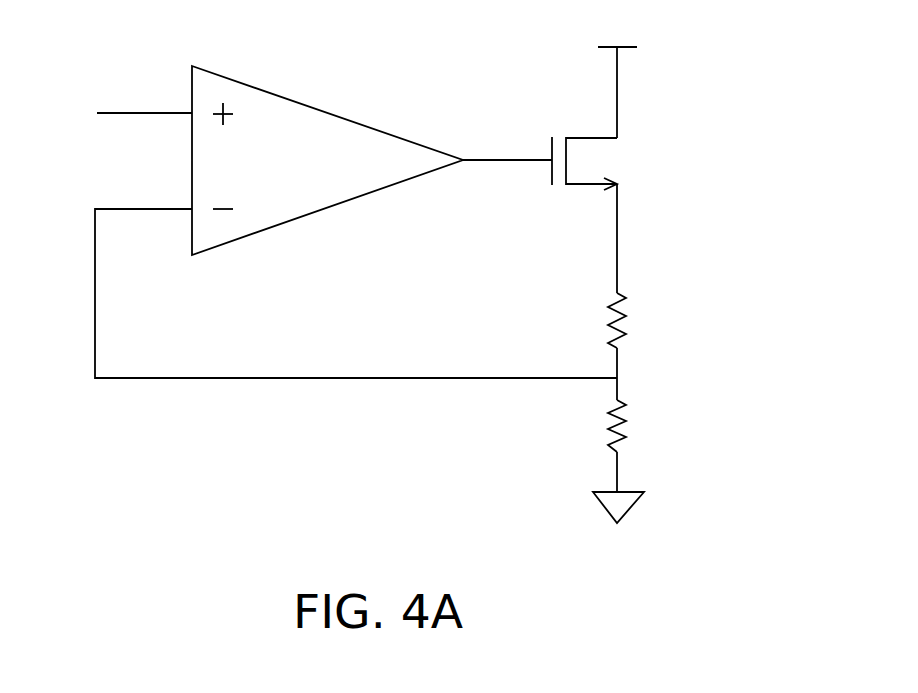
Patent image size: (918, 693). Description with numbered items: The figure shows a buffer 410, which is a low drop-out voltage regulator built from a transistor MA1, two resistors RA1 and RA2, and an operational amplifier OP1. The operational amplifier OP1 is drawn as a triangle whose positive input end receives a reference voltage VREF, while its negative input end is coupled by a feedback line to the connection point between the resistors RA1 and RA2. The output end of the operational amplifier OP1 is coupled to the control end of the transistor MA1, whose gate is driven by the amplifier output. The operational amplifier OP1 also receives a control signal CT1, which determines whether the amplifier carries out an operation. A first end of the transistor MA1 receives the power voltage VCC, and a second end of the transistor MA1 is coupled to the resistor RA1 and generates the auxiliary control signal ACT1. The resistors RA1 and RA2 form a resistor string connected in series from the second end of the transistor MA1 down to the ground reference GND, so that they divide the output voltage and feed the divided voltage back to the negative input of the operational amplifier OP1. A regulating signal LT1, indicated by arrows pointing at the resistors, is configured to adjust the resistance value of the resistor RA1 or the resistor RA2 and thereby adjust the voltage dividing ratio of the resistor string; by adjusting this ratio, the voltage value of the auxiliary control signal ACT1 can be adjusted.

The buffer 410 is at (760, 569).
The operational amplifier OP1 is at (328, 110).
The reference voltage VREF is at (115, 113).
The control signal CT1 is at (329, 208).
The transistor MA1 is at (610, 163).
The power voltage VCC is at (617, 74).
The auxiliary control signal ACT1 is at (617, 240).
The resistor RA1 is at (590, 320).
The resistor RA2 is at (590, 428).
The regulating signal LT1 is at (645, 322).
The ground GND is at (618, 507).